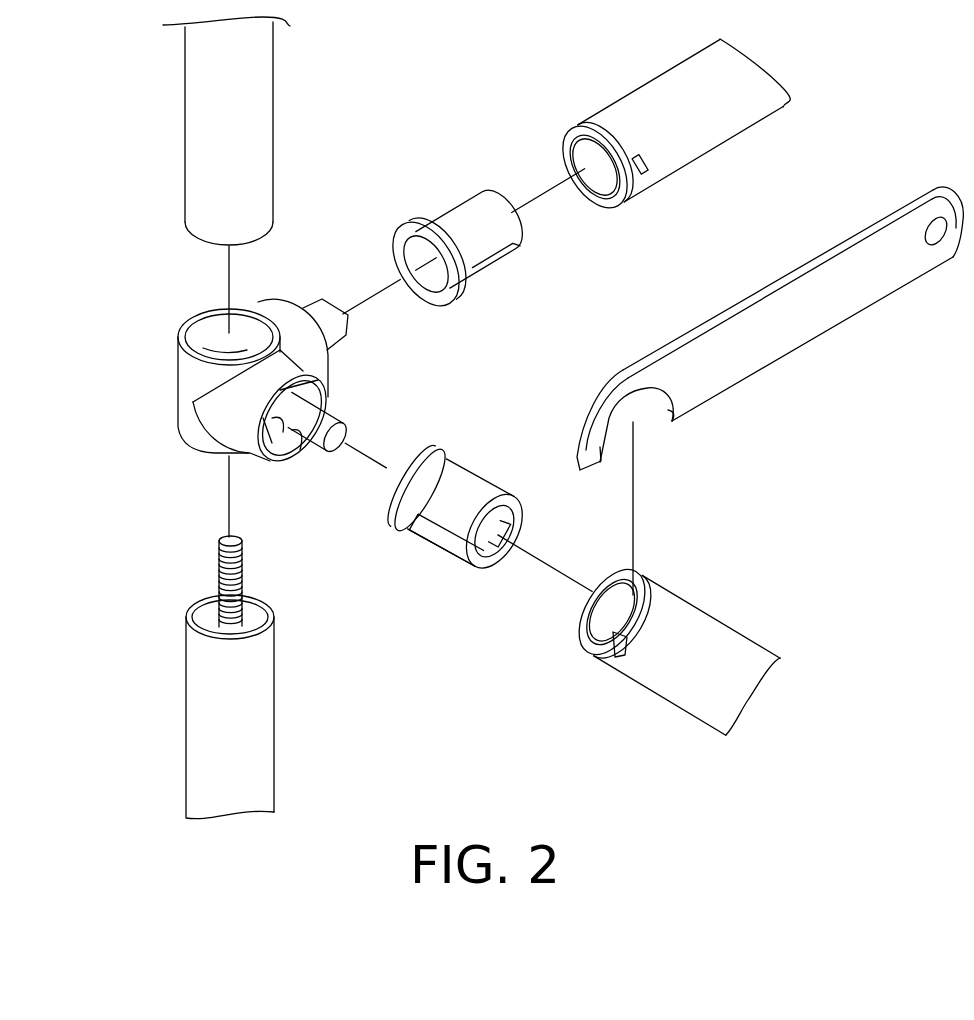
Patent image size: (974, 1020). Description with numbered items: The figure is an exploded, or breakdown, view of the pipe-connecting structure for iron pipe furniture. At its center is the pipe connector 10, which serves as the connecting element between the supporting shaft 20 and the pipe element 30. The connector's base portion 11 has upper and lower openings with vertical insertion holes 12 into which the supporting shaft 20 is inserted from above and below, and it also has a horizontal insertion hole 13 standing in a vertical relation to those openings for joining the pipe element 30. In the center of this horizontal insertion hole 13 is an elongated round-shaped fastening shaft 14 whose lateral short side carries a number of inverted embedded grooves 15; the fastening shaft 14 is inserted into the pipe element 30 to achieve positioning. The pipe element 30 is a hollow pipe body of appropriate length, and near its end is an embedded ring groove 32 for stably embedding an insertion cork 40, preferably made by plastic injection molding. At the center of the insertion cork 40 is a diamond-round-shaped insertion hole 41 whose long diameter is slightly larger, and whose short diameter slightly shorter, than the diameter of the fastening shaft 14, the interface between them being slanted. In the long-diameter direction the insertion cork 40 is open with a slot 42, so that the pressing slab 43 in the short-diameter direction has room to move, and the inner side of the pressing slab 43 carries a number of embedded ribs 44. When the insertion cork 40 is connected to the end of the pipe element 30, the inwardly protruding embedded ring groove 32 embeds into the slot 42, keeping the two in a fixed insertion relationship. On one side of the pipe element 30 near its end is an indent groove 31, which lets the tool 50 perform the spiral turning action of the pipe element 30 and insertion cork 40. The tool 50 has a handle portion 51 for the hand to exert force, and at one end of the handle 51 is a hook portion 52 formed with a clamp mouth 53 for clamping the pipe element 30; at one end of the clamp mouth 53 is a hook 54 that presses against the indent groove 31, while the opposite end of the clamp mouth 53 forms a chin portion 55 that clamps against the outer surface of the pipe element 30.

The pipe connector 10 is at (269, 403).
The base portion 11 is at (197, 385).
The vertical insertion hole 12 is at (213, 333).
The horizontal insertion hole 13 is at (310, 390).
The fastening shaft 14 is at (297, 432).
The inverted embedded groove 15 is at (282, 420).
The supporting shaft 20 is at (263, 91).
The pipe element 30 is at (655, 372).
The indent groove 31 is at (620, 662).
The embedded ring groove 32 is at (615, 613).
The insertion cork 40 is at (455, 391).
The insertion hole 41 is at (429, 262).
The slot 42 is at (446, 540).
The pressing slab 43 is at (494, 531).
The embedded rib 44 is at (500, 533).
The tool 50 is at (770, 391).
The handle portion 51 is at (825, 295).
The hook portion 52 is at (618, 373).
The clamp mouth 53 is at (633, 418).
The hook 54 is at (630, 517).
The arm bump 55 is at (670, 420).